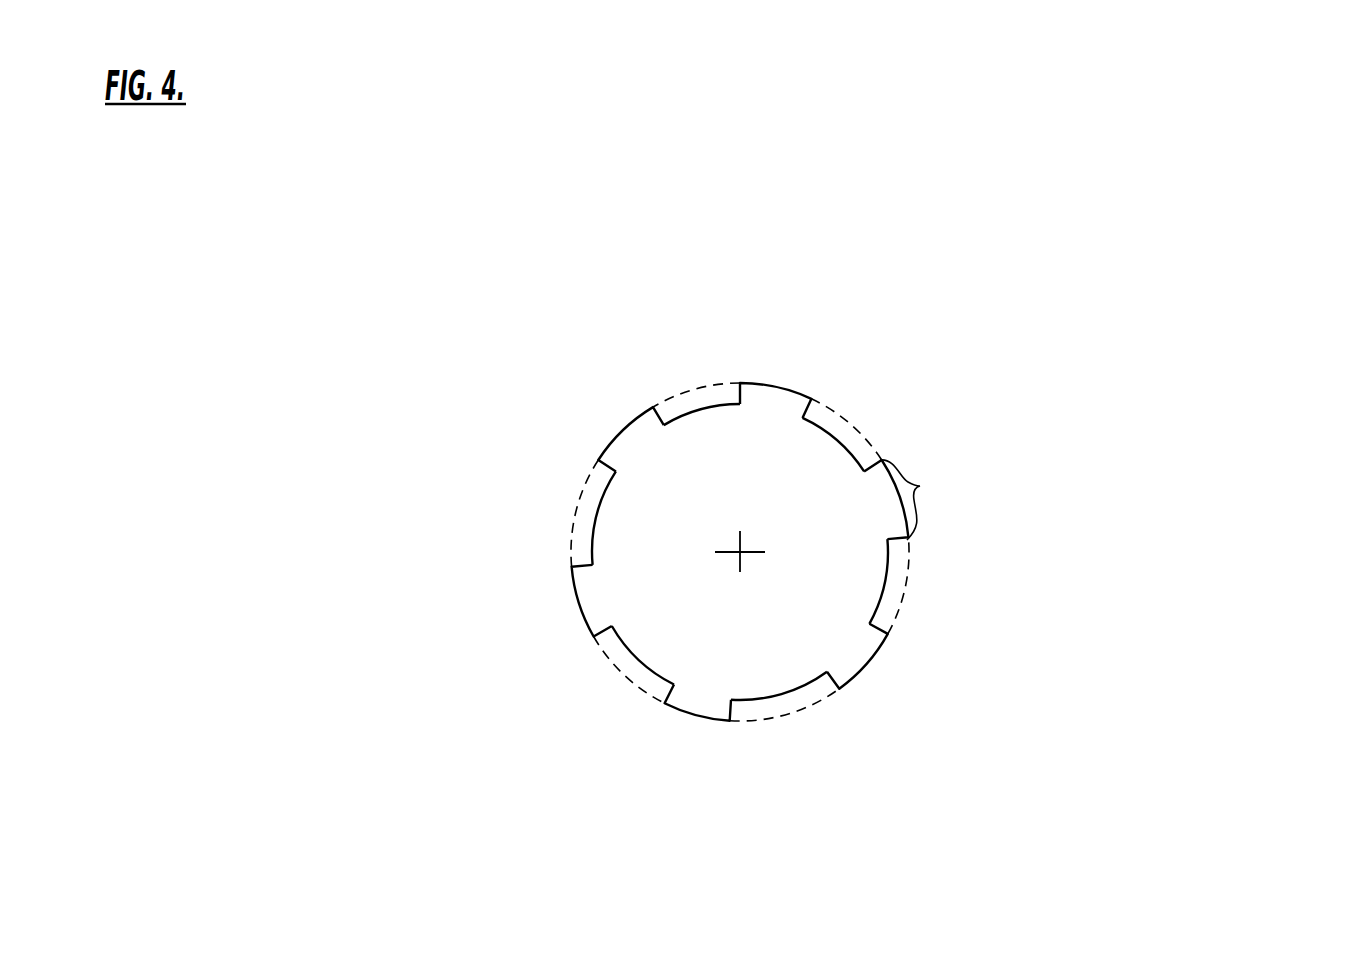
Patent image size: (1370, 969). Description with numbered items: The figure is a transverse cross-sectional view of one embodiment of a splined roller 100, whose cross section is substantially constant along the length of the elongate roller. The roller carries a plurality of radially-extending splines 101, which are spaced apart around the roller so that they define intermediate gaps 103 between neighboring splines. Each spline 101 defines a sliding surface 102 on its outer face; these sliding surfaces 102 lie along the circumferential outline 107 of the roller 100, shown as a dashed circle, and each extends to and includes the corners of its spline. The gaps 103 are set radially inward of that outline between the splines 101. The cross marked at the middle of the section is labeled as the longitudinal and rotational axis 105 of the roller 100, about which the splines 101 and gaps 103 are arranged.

The splined roller 100 is at (755, 464).
The spline 101 is at (768, 393).
The sliding surface 102 is at (920, 486).
The gap 103 is at (698, 397).
The longitudinal and rotational axis 105 is at (740, 552).
The circumferential outline 107 is at (536, 559).